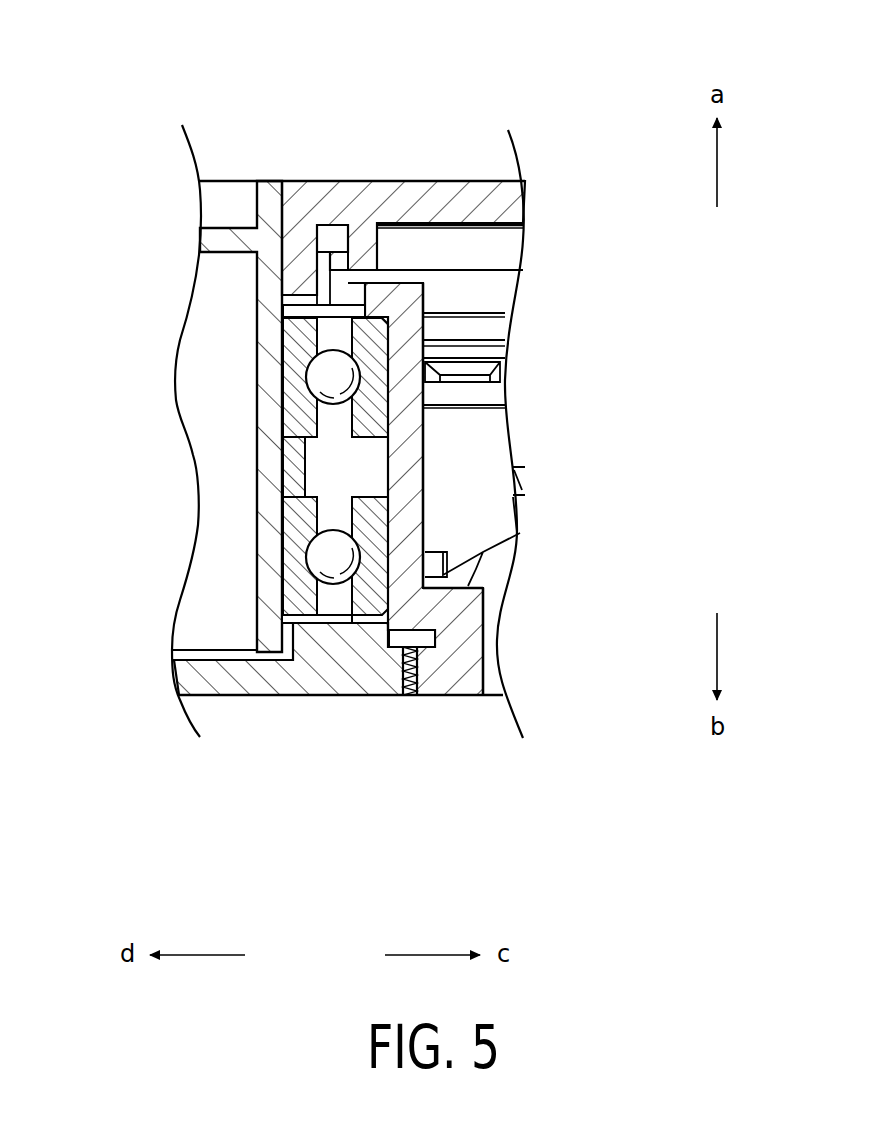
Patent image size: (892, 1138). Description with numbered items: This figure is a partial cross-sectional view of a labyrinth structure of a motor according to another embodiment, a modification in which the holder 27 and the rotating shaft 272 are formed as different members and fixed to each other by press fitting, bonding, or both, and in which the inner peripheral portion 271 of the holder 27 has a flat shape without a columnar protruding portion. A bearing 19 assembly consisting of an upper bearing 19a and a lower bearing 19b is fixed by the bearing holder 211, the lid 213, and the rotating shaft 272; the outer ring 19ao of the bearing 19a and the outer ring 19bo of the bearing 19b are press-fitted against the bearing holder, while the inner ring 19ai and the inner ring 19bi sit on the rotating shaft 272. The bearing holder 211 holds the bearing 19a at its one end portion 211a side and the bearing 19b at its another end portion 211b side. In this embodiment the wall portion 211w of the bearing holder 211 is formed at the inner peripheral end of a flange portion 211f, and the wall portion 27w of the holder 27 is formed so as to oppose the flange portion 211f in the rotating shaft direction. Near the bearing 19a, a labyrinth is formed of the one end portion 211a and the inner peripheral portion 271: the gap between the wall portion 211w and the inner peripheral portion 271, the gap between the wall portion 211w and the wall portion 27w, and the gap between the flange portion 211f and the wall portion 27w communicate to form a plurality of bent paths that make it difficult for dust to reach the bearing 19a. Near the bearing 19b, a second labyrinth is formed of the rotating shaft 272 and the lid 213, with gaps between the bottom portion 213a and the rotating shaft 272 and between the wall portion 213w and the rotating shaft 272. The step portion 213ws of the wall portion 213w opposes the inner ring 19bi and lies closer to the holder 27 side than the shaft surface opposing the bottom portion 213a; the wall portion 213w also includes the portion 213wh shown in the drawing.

The bearing 19 is at (518, 466).
The bearing 19a is at (496, 391).
The outer ring of the bearing 19a 19ao is at (372, 398).
The inner ring of the bearing 19a 19ai is at (307, 422).
The bearing 19b is at (496, 556).
The outer ring of the bearing 19b 19bo is at (370, 508).
The inner ring of the bearing 19b 19bi is at (302, 518).
The holder 27 is at (362, 326).
The inner peripheral portion 271 is at (425, 200).
The rotating shaft 272 is at (268, 220).
The wall portion 27w is at (364, 250).
The bearing holder 211 is at (475, 388).
The one end portion 211a is at (432, 325).
The another end portion 211b is at (492, 659).
The flange portion 211f is at (377, 303).
The wall portion 211w is at (337, 277).
The lid 213 is at (344, 743).
The bottom portion 213a is at (266, 668).
The wall portion 213w is at (345, 743).
The step portion 213ws is at (313, 648).
The screw hole of base wall 213wh is at (370, 628).